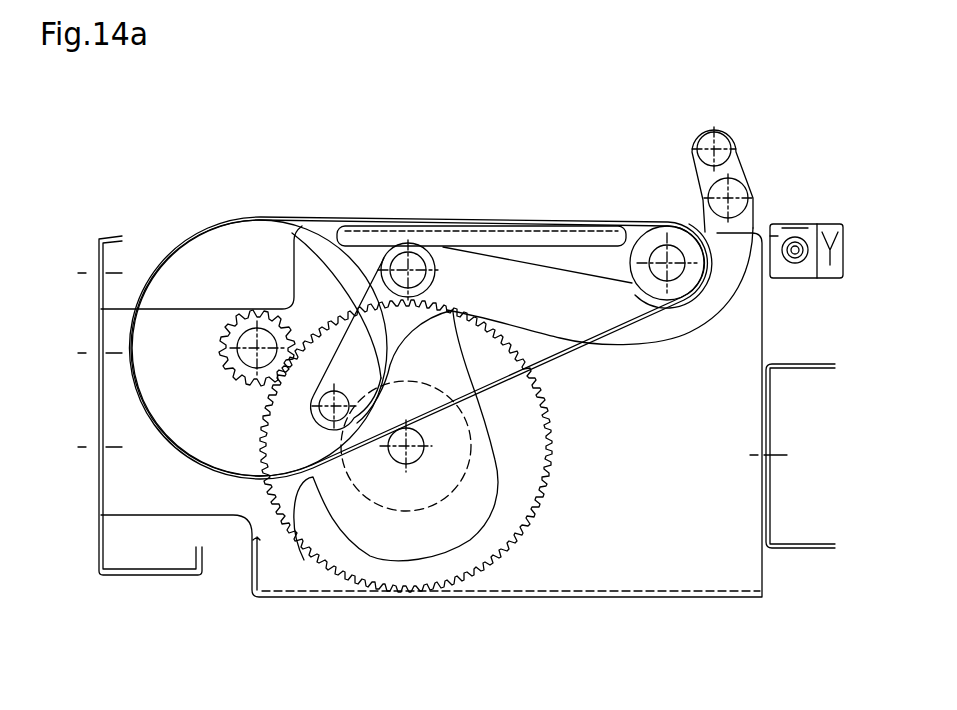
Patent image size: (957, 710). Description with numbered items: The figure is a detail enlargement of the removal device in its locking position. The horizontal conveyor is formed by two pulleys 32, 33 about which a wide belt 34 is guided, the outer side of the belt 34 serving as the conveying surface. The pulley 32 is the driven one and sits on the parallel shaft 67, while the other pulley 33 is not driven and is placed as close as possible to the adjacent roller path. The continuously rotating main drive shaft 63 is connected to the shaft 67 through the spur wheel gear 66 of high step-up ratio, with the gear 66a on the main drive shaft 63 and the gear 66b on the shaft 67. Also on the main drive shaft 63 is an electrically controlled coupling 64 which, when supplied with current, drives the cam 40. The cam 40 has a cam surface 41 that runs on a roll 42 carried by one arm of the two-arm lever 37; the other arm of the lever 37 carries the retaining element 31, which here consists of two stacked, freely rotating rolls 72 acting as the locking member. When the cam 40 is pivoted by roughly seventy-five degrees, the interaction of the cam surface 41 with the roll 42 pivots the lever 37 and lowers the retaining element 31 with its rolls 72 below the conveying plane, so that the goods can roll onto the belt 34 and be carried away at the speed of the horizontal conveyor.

The retaining element 31 is at (706, 118).
The pulley 32 is at (264, 240).
The pulley 33 is at (657, 243).
The belt 34 is at (580, 345).
The lever 37 is at (510, 280).
The cam 40 is at (349, 512).
The cam surface 41 is at (332, 422).
The roll 42 is at (318, 396).
The main drive shaft 63 is at (398, 461).
The coupling 64 is at (423, 505).
The spur wheel gear 66 is at (250, 395).
The spur wheel 66a is at (520, 470).
The spur wheel 66b is at (237, 318).
The parallel shaft 67 is at (250, 356).
The rolls 72 is at (727, 133).